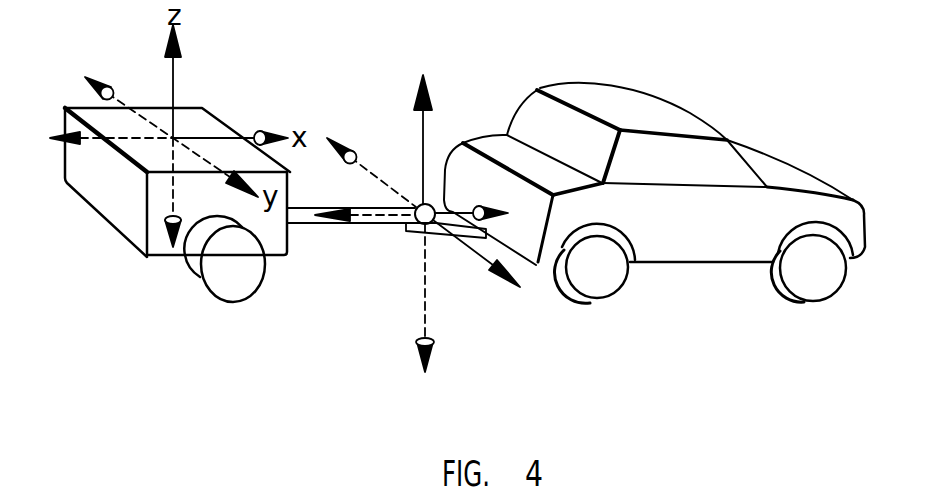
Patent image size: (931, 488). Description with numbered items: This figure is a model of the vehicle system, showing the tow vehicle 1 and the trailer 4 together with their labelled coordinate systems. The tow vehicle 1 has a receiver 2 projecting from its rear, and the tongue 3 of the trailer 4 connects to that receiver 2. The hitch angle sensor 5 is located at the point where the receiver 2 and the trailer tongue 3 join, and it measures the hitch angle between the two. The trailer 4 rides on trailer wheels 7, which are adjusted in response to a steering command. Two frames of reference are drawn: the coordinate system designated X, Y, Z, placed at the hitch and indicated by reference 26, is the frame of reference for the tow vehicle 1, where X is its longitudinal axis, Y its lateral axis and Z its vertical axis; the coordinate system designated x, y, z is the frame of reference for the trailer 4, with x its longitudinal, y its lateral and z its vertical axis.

The tow vehicle 1 is at (772, 124).
The receiver 2 is at (443, 237).
The tongue 3 is at (357, 226).
The trailer 4 is at (118, 252).
The hitch angle sensor 5 is at (433, 250).
The trailer wheels 7 is at (248, 283).
The vehicle coordinate system 26 is at (450, 85).